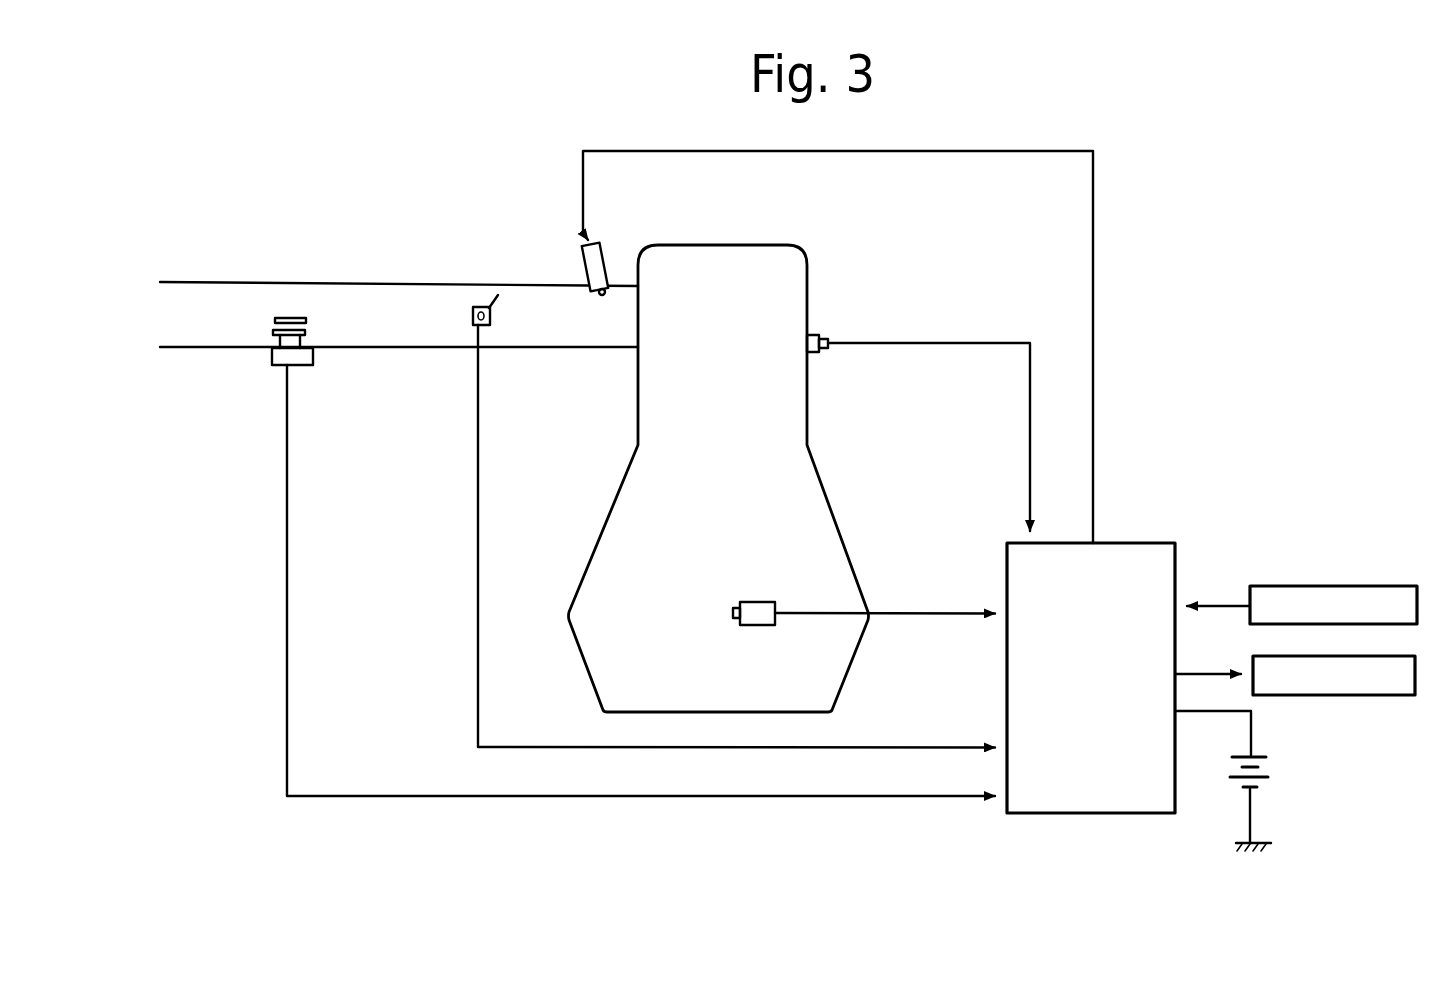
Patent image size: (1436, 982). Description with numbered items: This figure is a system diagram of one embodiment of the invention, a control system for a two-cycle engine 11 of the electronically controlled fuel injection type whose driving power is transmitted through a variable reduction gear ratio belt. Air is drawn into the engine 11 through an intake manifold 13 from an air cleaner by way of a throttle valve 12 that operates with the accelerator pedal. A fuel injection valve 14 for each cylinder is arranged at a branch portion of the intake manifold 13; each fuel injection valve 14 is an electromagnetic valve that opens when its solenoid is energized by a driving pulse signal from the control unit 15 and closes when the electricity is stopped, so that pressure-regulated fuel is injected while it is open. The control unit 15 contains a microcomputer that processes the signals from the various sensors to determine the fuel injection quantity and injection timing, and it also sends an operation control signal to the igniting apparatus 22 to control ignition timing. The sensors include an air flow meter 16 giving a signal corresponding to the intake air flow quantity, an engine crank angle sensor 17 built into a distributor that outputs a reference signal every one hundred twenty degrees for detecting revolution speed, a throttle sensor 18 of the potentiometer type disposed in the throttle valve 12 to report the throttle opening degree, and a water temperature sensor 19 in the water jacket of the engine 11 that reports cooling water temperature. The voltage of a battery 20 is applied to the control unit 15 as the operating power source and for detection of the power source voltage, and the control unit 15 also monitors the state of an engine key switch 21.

The engine 11 is at (807, 428).
The throttle valve 12 is at (472, 340).
The intake manifold 13 is at (553, 288).
The fuel injection valve 14 is at (597, 247).
The control unit 15 is at (1007, 565).
The air flow meter 16 is at (278, 366).
The engine crank angle sensor 17 is at (770, 609).
The throttle sensor 18 is at (490, 322).
The water temperature sensor 19 is at (815, 331).
The battery 20 is at (1277, 765).
The engine key switch 21 is at (1327, 592).
The igniting apparatus 22 is at (1333, 695).